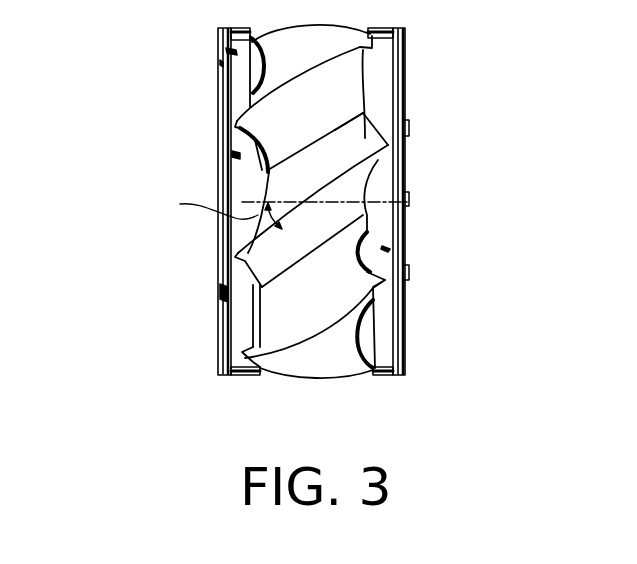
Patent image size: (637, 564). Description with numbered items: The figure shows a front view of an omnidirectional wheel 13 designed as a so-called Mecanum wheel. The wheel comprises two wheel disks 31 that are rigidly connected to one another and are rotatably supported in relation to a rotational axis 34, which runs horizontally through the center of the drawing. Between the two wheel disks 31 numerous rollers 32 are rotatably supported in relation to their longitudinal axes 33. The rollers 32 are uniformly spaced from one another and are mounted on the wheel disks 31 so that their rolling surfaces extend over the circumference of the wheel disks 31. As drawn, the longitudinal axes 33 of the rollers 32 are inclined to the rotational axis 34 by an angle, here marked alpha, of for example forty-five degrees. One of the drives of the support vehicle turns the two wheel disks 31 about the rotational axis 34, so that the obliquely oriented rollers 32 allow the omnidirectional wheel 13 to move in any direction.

The omnidirectional wheel 13 is at (264, 201).
The wheel disks 31 is at (220, 77).
The rollers 32 is at (350, 75).
The longitudinal axes 33 is at (257, 260).
The rotational axis 34 is at (393, 203).